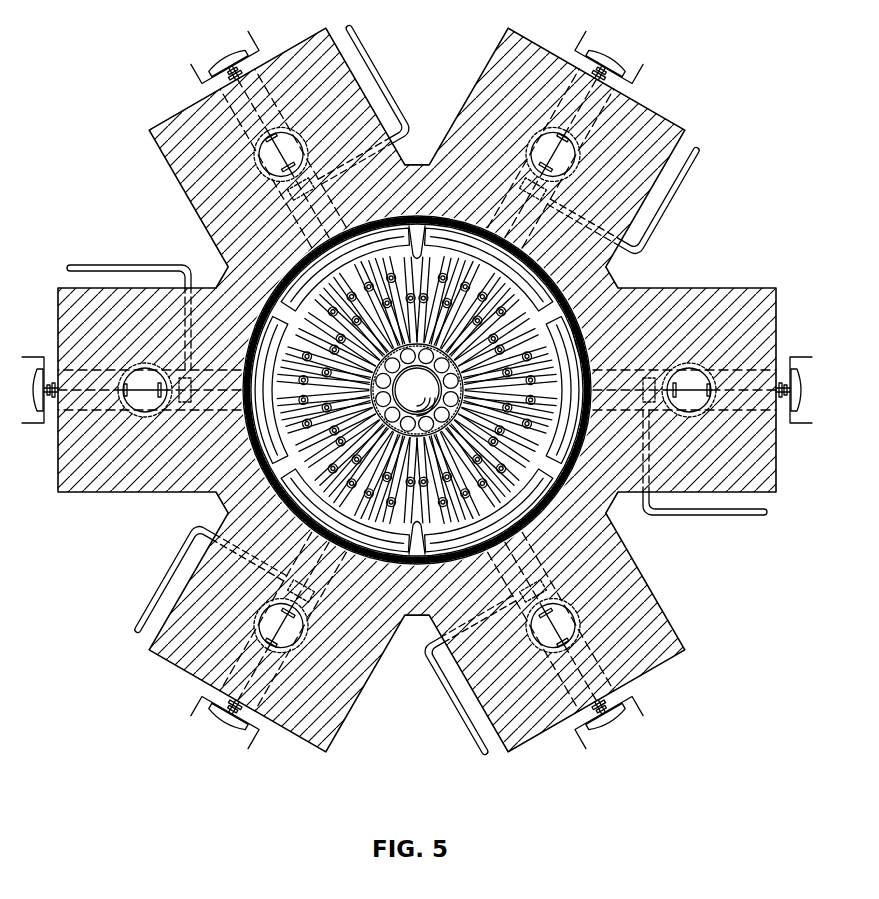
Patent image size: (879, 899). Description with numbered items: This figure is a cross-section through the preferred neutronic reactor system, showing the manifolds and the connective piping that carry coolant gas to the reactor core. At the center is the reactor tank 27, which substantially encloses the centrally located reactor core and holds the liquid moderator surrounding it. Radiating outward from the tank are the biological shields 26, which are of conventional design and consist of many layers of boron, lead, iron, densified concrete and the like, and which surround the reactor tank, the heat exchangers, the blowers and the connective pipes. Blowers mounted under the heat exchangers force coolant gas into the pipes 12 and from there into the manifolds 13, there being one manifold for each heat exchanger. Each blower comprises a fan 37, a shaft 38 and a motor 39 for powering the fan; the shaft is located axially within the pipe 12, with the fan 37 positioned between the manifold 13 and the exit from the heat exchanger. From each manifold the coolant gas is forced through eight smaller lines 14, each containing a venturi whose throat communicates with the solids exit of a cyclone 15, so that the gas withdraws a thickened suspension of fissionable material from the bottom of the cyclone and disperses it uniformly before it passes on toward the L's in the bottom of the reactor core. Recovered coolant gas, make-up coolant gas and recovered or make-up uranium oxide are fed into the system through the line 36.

The pipe 12 is at (330, 210).
The manifold 13 is at (296, 268).
The smaller line 14 is at (417, 224).
The cyclone 15 is at (282, 440).
The biological shield 26 is at (148, 120).
The reactor tank 27 is at (572, 326).
The line 36 is at (372, 60).
The fan 37 is at (298, 165).
The shaft 38 is at (266, 105).
The motor 39 is at (235, 16).